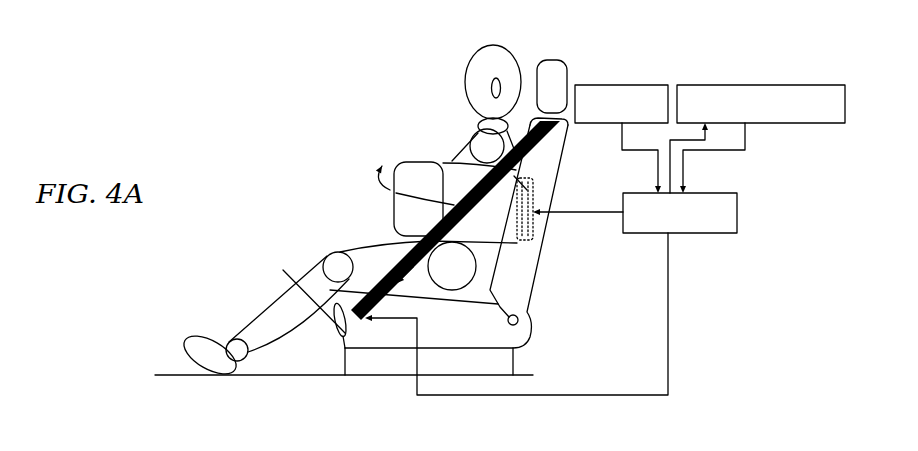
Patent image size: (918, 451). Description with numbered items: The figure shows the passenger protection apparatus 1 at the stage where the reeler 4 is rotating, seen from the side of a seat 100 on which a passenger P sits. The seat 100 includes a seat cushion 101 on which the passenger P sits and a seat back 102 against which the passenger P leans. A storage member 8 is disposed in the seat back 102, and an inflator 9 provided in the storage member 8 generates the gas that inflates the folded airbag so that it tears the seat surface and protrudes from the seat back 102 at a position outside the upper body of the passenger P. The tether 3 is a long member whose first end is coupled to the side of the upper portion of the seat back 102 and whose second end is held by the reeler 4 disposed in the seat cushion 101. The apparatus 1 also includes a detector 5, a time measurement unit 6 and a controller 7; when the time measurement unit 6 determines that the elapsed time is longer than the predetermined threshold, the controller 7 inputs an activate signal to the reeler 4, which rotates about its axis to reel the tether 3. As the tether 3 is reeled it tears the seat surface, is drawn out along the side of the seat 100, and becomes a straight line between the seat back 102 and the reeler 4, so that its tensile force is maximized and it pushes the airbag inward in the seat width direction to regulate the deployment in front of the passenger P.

The passenger protection apparatus 1 is at (313, 83).
The tether 3 is at (344, 348).
The reeler 4 is at (338, 331).
The detector 5 is at (647, 84).
The time measurement unit 6 is at (753, 84).
The controller 7 is at (697, 192).
The storage member 8 is at (537, 199).
The inflator 9 is at (536, 187).
The seat 100 is at (568, 63).
The seat cushion 101 is at (300, 298).
The seat back 102 is at (558, 58).
The passenger P is at (468, 64).